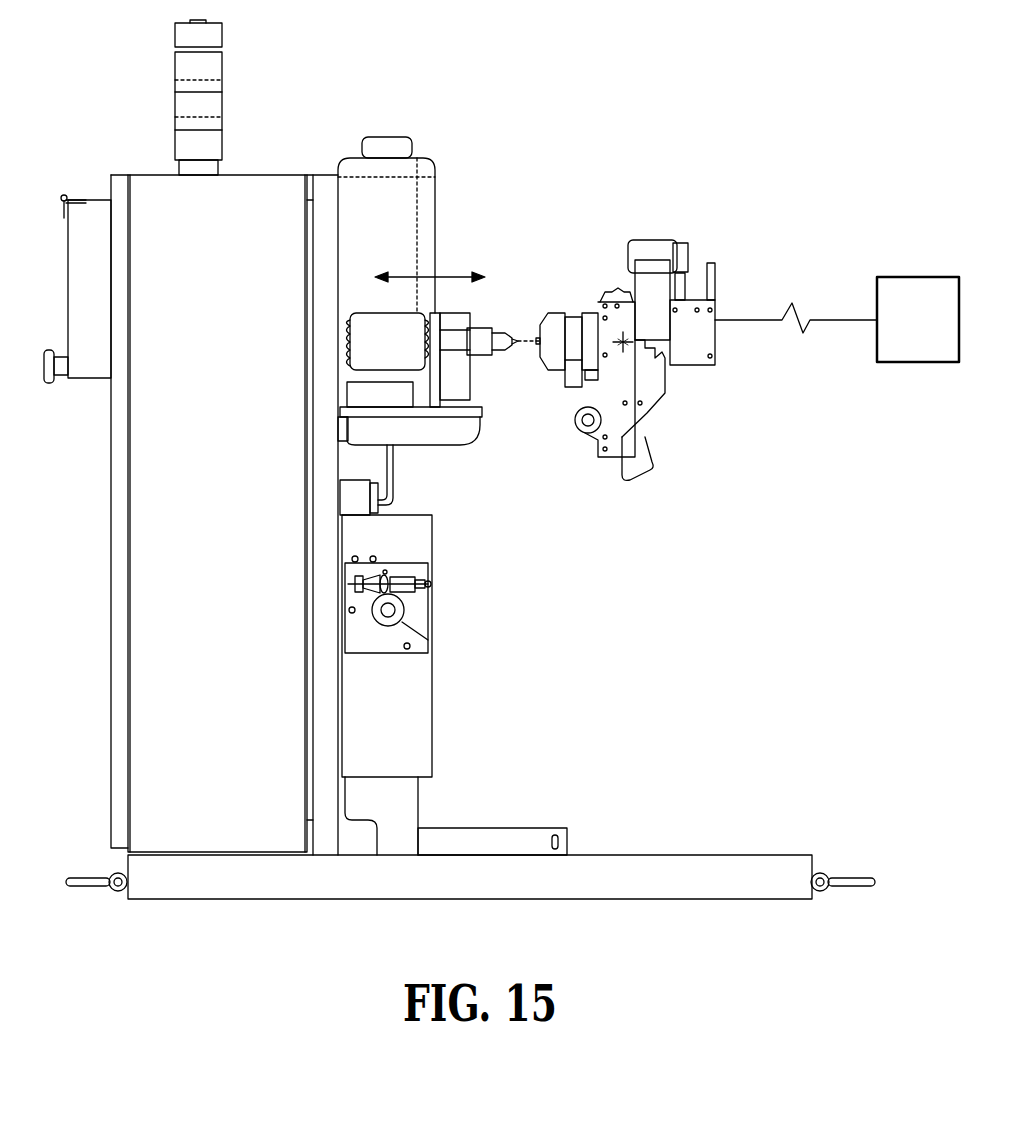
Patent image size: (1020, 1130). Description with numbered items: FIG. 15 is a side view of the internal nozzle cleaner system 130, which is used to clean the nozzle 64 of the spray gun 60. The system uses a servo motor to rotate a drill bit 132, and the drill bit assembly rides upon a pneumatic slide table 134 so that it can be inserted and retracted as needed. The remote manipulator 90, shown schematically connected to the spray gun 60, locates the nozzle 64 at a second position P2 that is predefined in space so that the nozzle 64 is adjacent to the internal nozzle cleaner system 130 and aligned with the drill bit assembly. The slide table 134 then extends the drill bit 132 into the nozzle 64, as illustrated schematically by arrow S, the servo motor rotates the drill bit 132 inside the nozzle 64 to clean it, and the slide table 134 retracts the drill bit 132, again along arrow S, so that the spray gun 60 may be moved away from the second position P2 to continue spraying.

The internal nozzle cleaner system 130 is at (540, 240).
The pneumatic slide table 134 is at (393, 385).
The drill bit 132 is at (520, 343).
The arrow S is at (447, 273).
The nozzle 64 is at (552, 313).
The spray gun 60 is at (650, 445).
The second position P2 is at (625, 345).
The remote manipulator 90 is at (837, 319).